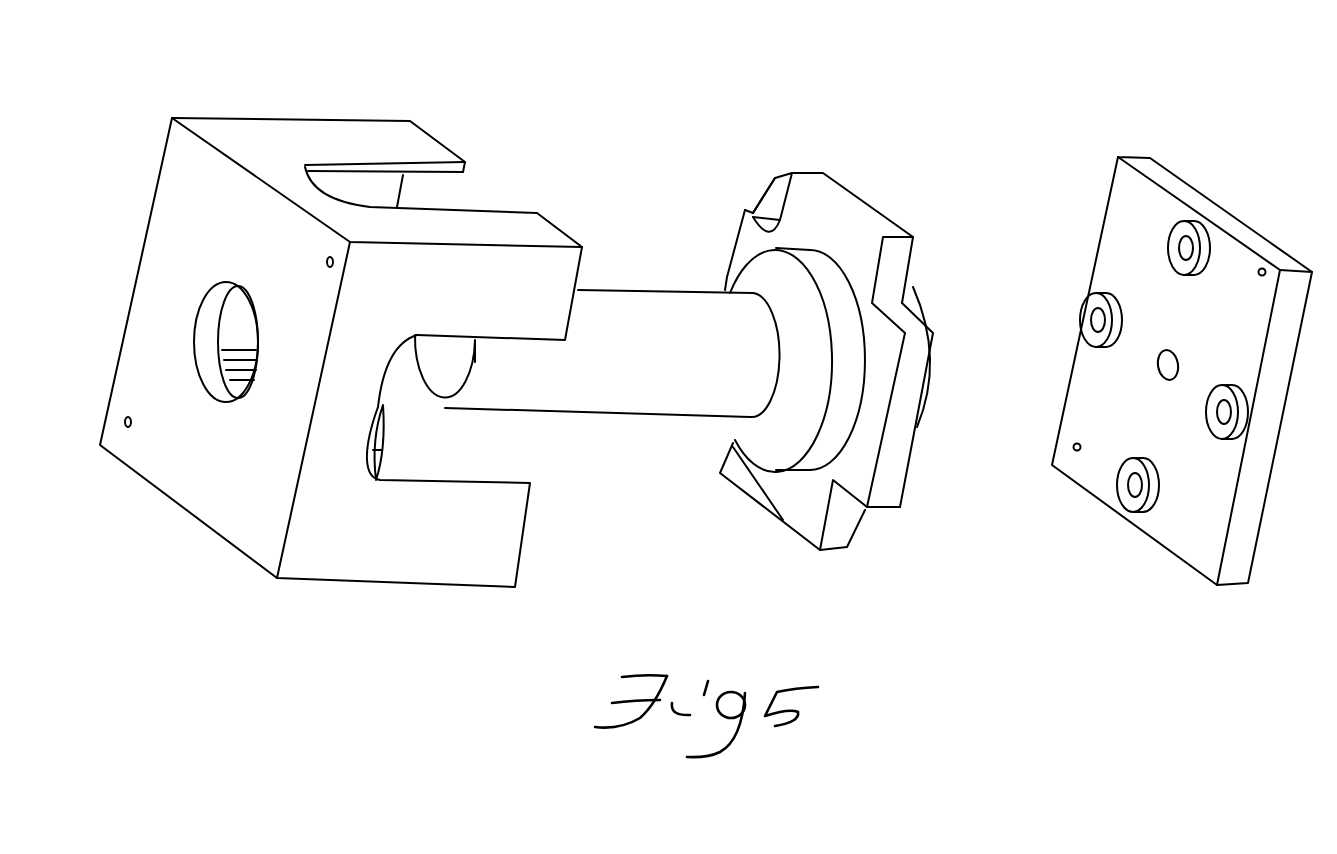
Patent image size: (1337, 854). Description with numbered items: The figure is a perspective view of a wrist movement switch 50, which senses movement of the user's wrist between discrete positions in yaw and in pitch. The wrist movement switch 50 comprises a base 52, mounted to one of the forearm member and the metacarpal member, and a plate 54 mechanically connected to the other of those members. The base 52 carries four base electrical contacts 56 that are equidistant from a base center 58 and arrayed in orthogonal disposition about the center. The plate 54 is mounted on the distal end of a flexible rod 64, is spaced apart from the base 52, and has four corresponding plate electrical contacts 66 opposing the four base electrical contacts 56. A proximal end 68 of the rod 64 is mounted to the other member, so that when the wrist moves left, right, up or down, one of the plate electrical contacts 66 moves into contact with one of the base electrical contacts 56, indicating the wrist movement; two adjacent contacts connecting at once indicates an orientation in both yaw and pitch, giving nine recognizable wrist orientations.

The wrist movement switch 50 is at (363, 117).
The base 52 is at (1118, 157).
The plate 54 is at (800, 172).
The base electrical contacts 56 is at (1143, 242).
The base center 58 is at (1160, 372).
The flexible rod 64 is at (650, 293).
The plate electrical contacts 66 is at (787, 195).
The proximal end 68 is at (203, 362).